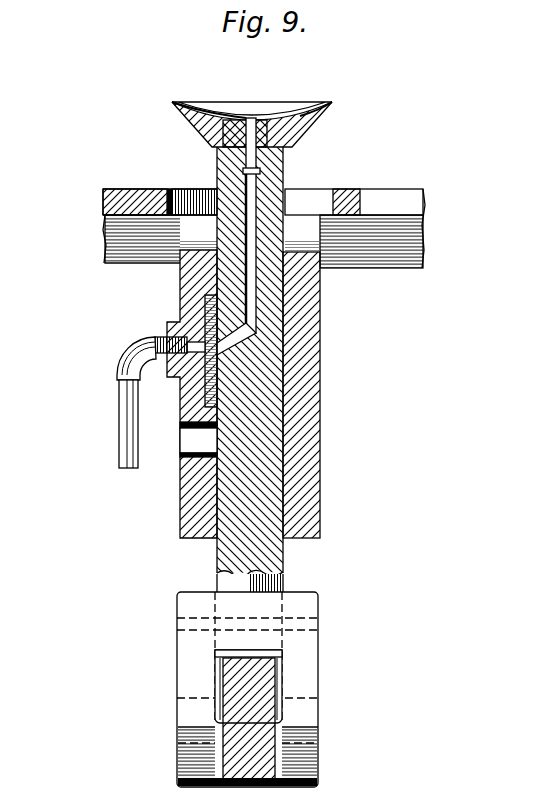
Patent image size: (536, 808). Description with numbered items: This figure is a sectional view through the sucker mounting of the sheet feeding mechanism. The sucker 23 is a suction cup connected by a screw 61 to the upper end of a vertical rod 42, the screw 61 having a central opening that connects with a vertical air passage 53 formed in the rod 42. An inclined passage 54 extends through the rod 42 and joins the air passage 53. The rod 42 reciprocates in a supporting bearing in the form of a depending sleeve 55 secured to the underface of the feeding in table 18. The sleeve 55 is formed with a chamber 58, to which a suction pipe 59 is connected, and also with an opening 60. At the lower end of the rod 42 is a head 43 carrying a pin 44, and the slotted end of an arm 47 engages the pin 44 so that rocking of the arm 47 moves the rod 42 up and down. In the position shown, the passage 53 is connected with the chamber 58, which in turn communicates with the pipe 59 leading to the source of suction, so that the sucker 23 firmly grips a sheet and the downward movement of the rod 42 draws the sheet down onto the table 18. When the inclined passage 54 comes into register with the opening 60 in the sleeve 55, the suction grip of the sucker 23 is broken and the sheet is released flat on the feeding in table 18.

The feeding in table 18 is at (410, 190).
The sucker 23 is at (305, 107).
The vertical rod 42 is at (273, 180).
The head 43 is at (305, 637).
The pin 44 is at (275, 728).
The arm 47 is at (257, 678).
The vertical air passage 53 is at (250, 297).
The inclined passage 54 is at (230, 345).
The depending sleeve 55 is at (320, 462).
The chamber 58 is at (200, 395).
The suction pipe 59 is at (122, 420).
The opening 60 is at (195, 442).
The screw 61 is at (235, 118).